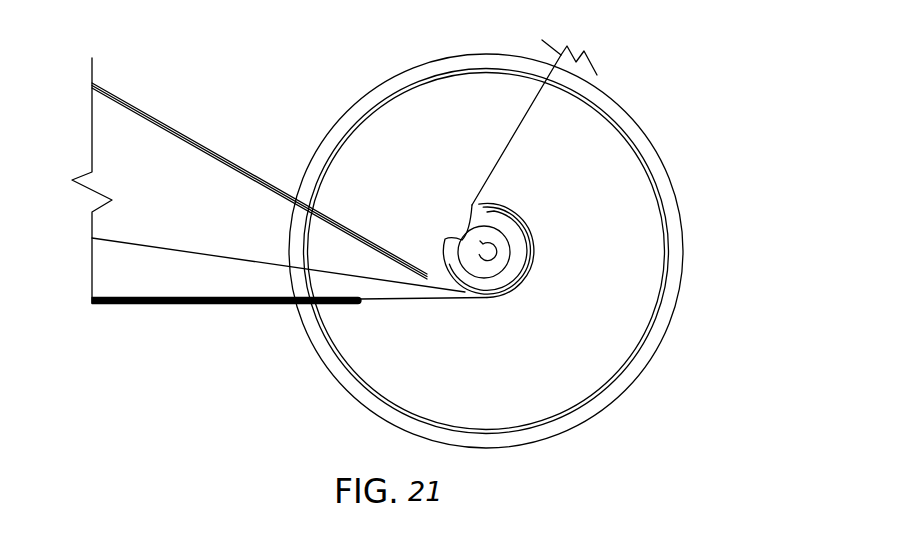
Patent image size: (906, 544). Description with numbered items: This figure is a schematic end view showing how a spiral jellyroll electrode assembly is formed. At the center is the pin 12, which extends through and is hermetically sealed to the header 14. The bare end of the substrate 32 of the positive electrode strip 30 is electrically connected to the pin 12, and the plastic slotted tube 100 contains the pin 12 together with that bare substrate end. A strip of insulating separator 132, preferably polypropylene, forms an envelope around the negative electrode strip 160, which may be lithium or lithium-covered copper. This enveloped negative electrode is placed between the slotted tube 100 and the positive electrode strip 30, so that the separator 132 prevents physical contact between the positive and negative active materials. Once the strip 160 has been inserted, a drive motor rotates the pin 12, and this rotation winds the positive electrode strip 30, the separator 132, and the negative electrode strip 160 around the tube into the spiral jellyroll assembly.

The pin 12 is at (511, 240).
The header 14 is at (682, 303).
The positive electrode strip 30 is at (162, 303).
The substrate 32 is at (418, 301).
The slotted tube 100 is at (513, 268).
The separator 132 is at (158, 246).
The negative electrode strip 160 is at (122, 92).